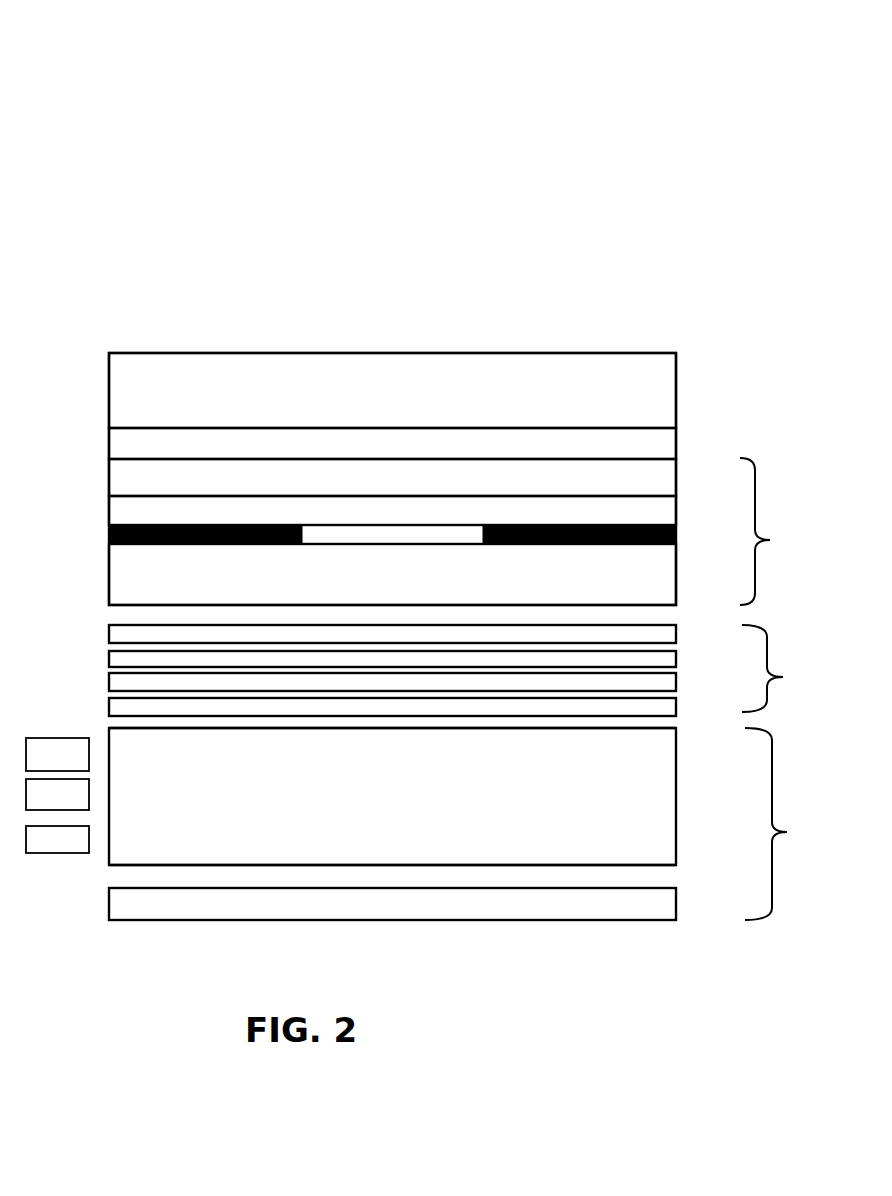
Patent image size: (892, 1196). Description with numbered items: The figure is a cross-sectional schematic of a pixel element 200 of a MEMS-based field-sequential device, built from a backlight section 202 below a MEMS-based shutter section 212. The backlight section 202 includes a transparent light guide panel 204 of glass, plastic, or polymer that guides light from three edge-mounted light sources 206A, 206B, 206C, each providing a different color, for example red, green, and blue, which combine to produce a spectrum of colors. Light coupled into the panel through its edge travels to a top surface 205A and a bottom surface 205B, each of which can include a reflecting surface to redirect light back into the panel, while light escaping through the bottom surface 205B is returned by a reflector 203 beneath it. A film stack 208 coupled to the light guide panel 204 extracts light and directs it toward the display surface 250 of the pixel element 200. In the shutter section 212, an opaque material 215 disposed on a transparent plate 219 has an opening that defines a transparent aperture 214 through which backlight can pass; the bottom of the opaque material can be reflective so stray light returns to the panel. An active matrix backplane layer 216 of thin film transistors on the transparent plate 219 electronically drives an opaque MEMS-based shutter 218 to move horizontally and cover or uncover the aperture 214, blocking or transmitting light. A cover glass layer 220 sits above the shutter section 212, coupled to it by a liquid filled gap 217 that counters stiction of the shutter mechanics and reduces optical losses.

The pixel element 200 is at (607, 110).
The display surface 250 is at (303, 352).
The cover glass layer 220 is at (392, 390).
The liquid filled gap 217 is at (392, 443).
The MEMS-based shutter 218 is at (392, 477).
The active matrix backplane layer 216 is at (392, 510).
The transparent aperture 214 is at (372, 534).
The opaque material 215 is at (137, 546).
The transparent plate 219 is at (392, 574).
The MEMS-based shutter section 212 is at (791, 531).
The film stack 208 is at (481, 670).
The top surface 205A is at (648, 728).
The transparent light guide panel 204 is at (392, 796).
The bottom surface 205B is at (668, 865).
The backlight section 202 is at (801, 824).
The reflector 203 is at (467, 920).
The light source 206A is at (57, 754).
The light source 206B is at (57, 794).
The light source 206C is at (57, 839).